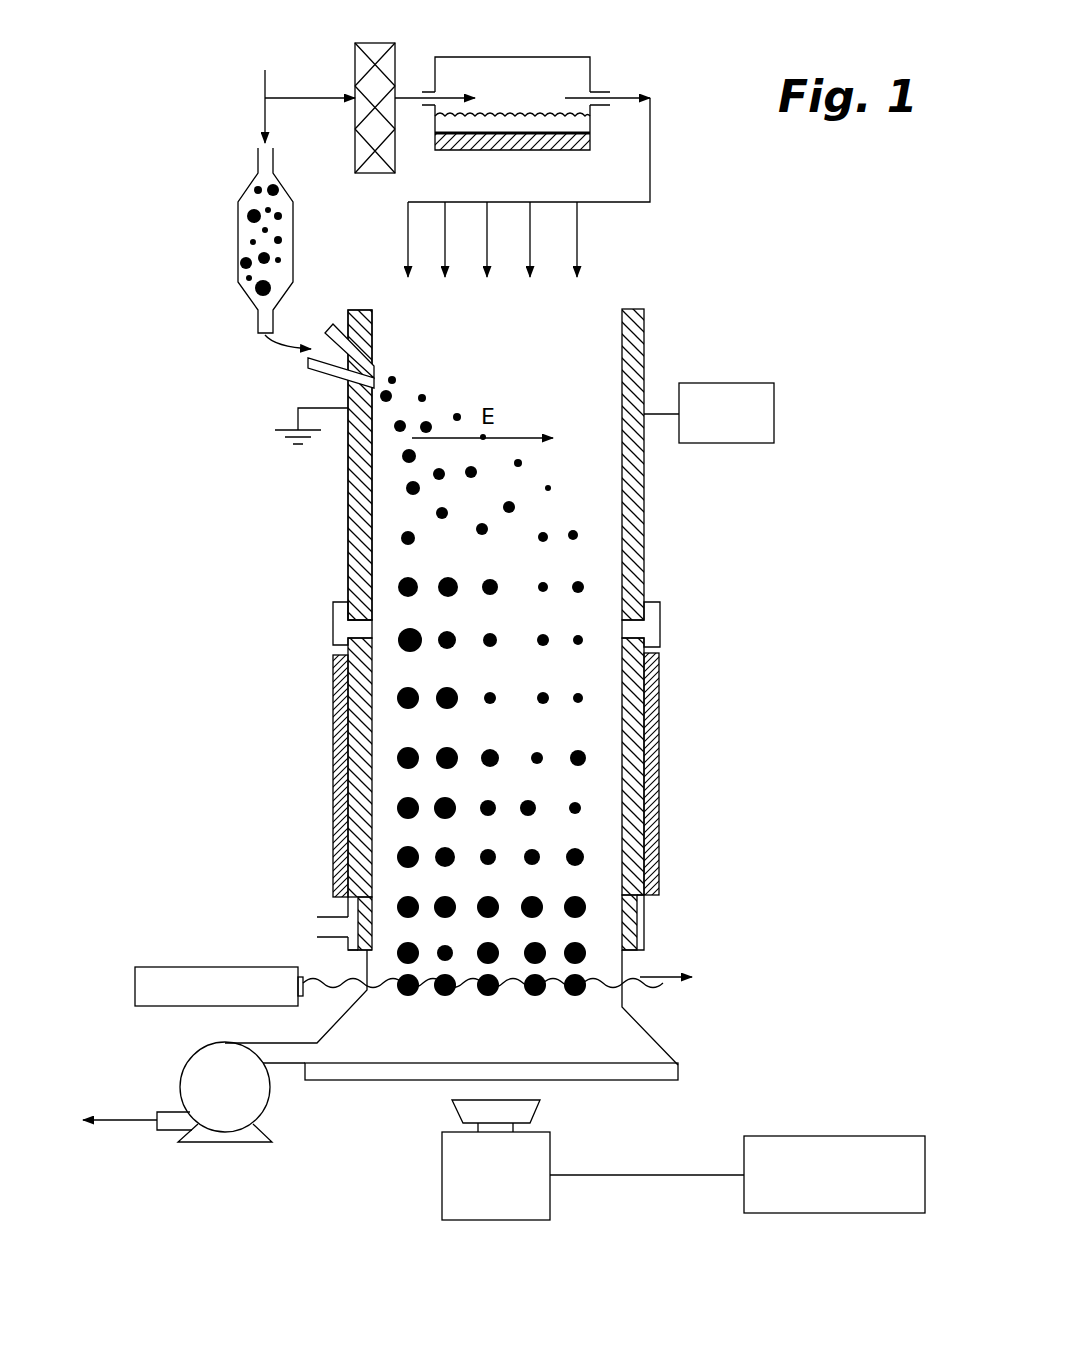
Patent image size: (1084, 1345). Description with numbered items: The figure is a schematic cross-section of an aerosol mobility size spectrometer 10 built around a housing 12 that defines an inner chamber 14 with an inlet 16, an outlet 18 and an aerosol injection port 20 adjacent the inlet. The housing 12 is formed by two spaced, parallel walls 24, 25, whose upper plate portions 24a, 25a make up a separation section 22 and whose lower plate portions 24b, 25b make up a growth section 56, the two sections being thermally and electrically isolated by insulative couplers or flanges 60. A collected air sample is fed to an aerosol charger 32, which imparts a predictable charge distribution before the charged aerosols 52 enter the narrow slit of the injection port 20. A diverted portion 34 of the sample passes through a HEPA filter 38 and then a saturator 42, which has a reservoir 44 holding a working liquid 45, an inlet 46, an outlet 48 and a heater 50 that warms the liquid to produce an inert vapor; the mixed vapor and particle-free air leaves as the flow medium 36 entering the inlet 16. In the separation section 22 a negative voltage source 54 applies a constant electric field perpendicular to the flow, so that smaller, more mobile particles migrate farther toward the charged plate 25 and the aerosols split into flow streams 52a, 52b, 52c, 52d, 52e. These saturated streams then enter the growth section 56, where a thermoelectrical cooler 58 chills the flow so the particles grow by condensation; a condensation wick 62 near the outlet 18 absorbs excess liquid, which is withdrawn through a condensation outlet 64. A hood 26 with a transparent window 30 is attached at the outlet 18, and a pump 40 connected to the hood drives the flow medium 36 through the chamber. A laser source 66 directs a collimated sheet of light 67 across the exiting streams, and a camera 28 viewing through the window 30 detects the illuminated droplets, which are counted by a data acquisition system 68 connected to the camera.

The aerosol mobility size spectrometer 10 is at (151, 118).
The housing 12 is at (284, 531).
The inner chamber 14 is at (656, 629).
The inlet 16 is at (597, 330).
The outlet 18 is at (642, 965).
The aerosol injection port 20 is at (320, 367).
The separation section 22 is at (350, 461).
The parallel wall 24 is at (320, 630).
The plate portion 24a is at (351, 517).
The plate portion 24b is at (338, 900).
The parallel wall 25 is at (645, 520).
The plate portion 25a is at (645, 338).
The plate portion 25b is at (644, 922).
The hood 26 is at (652, 1045).
The camera 28 is at (442, 1202).
The window 30 is at (665, 1082).
The aerosol charger 32 is at (238, 236).
The diverted portion of the collected air sample 34 is at (301, 96).
The flow medium 36 is at (600, 252).
The HEPA filter 38 is at (383, 43).
The pump 40 is at (234, 1145).
The saturator 42 is at (565, 57).
The reservoir 44 is at (438, 128).
The working liquid 45 is at (592, 126).
The inlet 46 is at (424, 94).
The outlet 48 is at (612, 107).
The heater 50 is at (565, 151).
The charged aerosols 52 is at (280, 348).
The flow stream 52a is at (422, 686).
The flow stream 52b is at (450, 707).
The flow stream 52c is at (496, 696).
The flow stream 52d is at (541, 705).
The flow stream 52e is at (596, 686).
The negative voltage source 54 is at (774, 432).
The growth section 56 is at (333, 805).
The thermoelectrical cooler 58 is at (660, 790).
The insulative couplers or flanges 60 is at (660, 628).
The condensation wick 62 is at (368, 951).
The condensation outlet 64 is at (316, 928).
The laser source 66 is at (157, 967).
The collimated sheet of light 67 is at (665, 981).
The data acquisition system 68 is at (906, 1136).